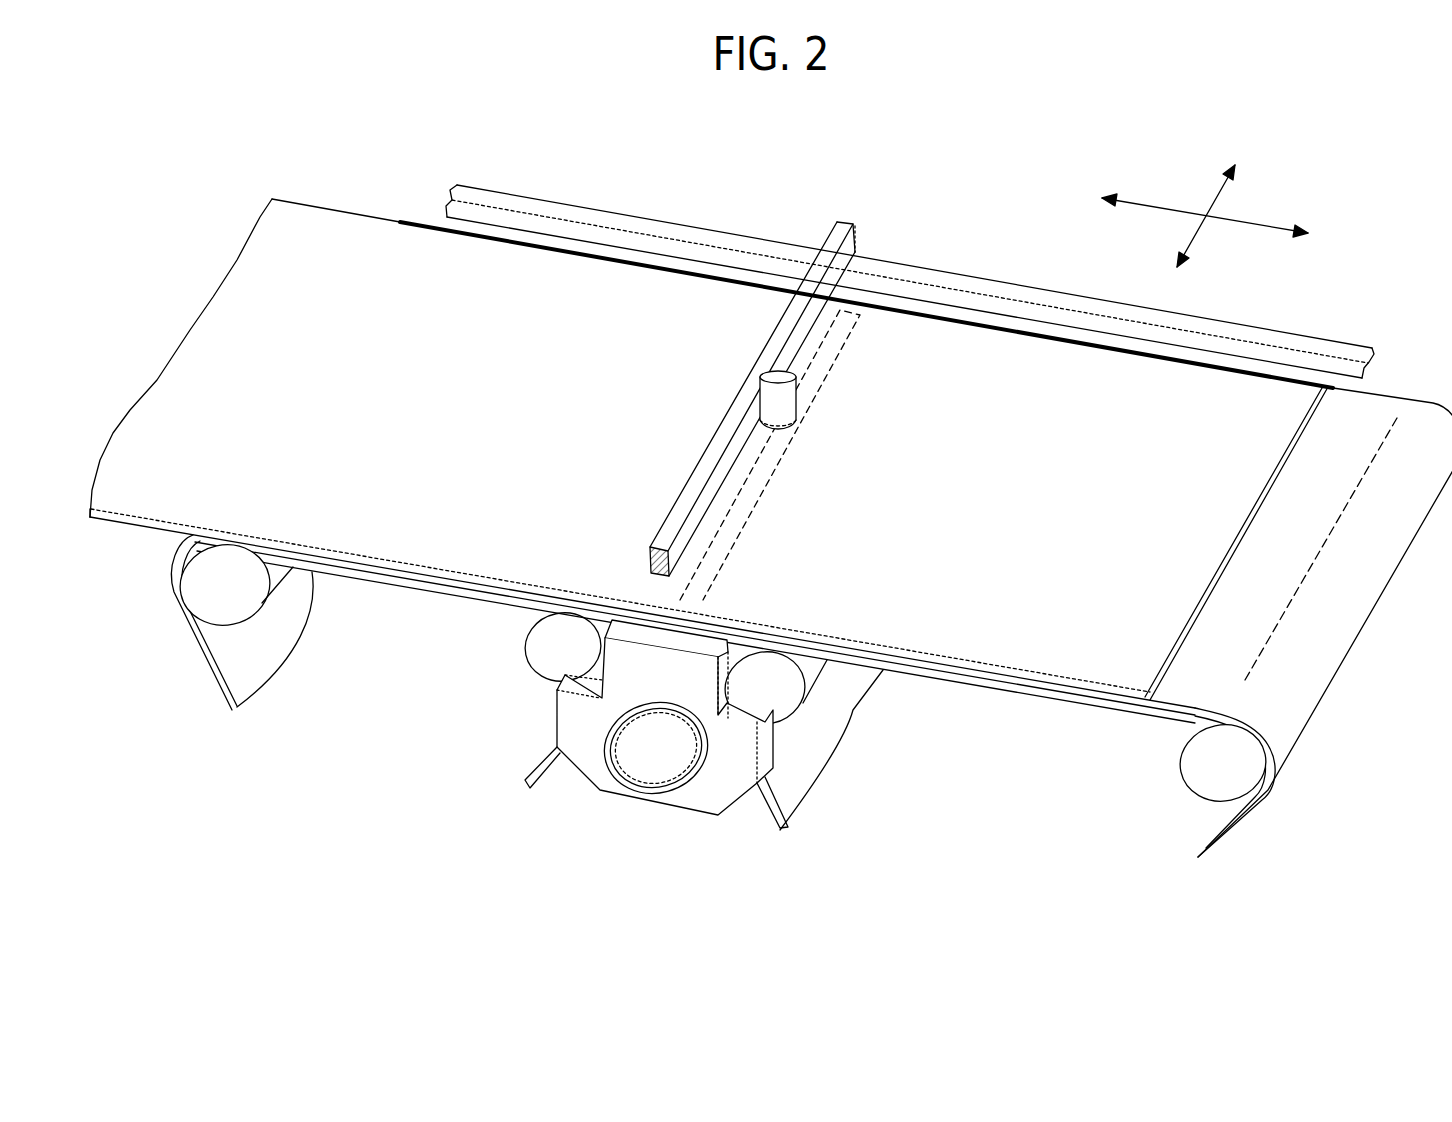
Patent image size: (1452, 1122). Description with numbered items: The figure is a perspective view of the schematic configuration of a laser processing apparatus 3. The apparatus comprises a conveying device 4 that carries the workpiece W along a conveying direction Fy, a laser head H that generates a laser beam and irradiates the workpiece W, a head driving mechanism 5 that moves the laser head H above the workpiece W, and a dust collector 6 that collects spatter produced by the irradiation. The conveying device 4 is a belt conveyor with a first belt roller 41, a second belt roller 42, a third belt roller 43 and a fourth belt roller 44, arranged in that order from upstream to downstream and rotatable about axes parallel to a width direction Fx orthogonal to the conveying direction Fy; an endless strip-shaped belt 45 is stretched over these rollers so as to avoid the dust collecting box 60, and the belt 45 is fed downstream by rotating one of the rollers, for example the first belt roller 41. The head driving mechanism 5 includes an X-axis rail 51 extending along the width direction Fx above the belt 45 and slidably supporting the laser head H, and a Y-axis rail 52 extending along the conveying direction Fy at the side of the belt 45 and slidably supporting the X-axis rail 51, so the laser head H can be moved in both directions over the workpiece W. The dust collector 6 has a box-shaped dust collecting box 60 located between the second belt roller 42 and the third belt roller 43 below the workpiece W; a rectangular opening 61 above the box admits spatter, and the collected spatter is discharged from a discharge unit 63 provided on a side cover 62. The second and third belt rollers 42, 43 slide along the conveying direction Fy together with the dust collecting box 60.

The laser processing apparatus 3 is at (771, 529).
The conveying device 4 is at (771, 622).
The first belt roller 41 is at (258, 605).
The second belt roller 42 is at (537, 642).
The third belt roller 43 is at (798, 695).
The fourth belt roller 44 is at (1190, 755).
The belt 45 is at (258, 658).
The head driving mechanism 5 is at (910, 376).
The X-axis rail 51 is at (843, 222).
The Y-axis rail 52 is at (940, 273).
The dust collector 6 is at (622, 785).
The dust collecting box 60 is at (619, 745).
The opening 61 is at (852, 313).
The side cover 62 is at (565, 717).
The discharge unit 63 is at (683, 795).
The workpiece W is at (314, 216).
The laser head H is at (797, 395).
The width direction Fx is at (1208, 198).
The conveying direction Fy is at (1247, 224).